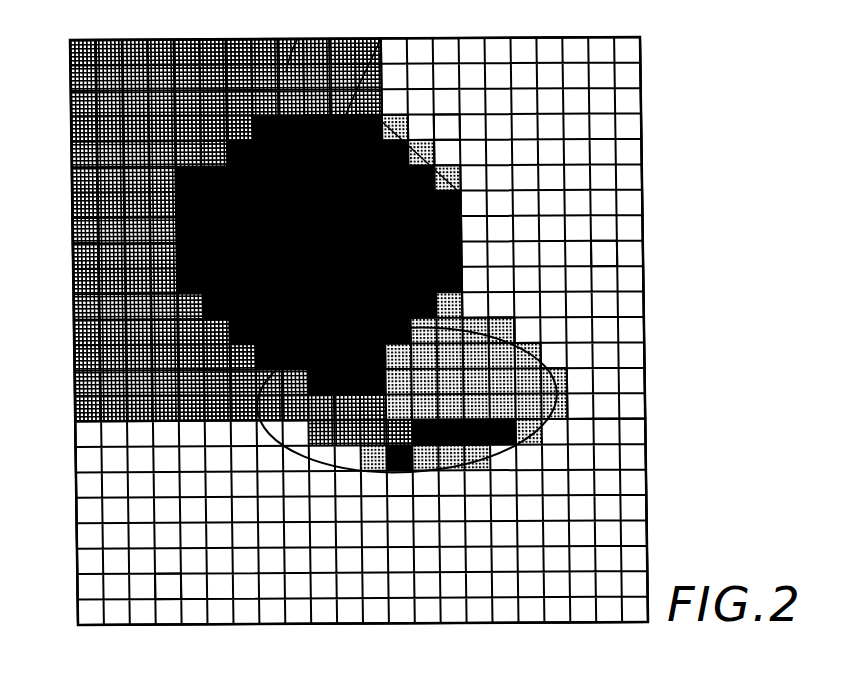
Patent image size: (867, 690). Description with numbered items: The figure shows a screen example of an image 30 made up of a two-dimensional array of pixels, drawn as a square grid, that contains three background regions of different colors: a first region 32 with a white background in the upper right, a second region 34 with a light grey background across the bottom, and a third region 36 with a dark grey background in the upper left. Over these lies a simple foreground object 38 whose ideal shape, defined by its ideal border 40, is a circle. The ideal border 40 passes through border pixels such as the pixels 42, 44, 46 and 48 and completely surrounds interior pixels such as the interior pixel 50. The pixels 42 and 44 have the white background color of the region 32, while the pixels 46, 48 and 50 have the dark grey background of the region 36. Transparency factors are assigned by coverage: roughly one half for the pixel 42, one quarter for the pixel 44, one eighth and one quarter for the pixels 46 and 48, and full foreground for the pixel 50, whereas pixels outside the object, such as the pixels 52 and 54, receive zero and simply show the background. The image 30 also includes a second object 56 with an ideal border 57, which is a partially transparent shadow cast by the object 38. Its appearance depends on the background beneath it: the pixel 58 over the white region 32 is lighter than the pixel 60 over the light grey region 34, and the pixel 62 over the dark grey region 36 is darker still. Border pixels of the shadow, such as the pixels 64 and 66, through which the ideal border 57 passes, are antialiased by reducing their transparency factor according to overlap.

The image 30 is at (359, 331).
The first region 32 is at (513, 228).
The second region 34 is at (168, 587).
The third region 36 is at (241, 242).
The foreground object 38 is at (319, 254).
The ideal border 40 is at (297, 40).
The border pixel 42 is at (447, 127).
The border pixel 44 is at (422, 216).
The border pixel 46 is at (85, 231).
The border pixel 48 is at (86, 256).
The interior pixel 50 is at (380, 40).
The pixel 52 is at (361, 522).
The pixel 54 is at (604, 254).
The second object 56 is at (463, 343).
The ideal border 57 is at (557, 408).
The pixel 58 is at (476, 394).
The pixel 60 is at (451, 445).
The pixel 62 is at (295, 408).
The border pixel 64 is at (398, 356).
The border pixel 66 is at (501, 330).